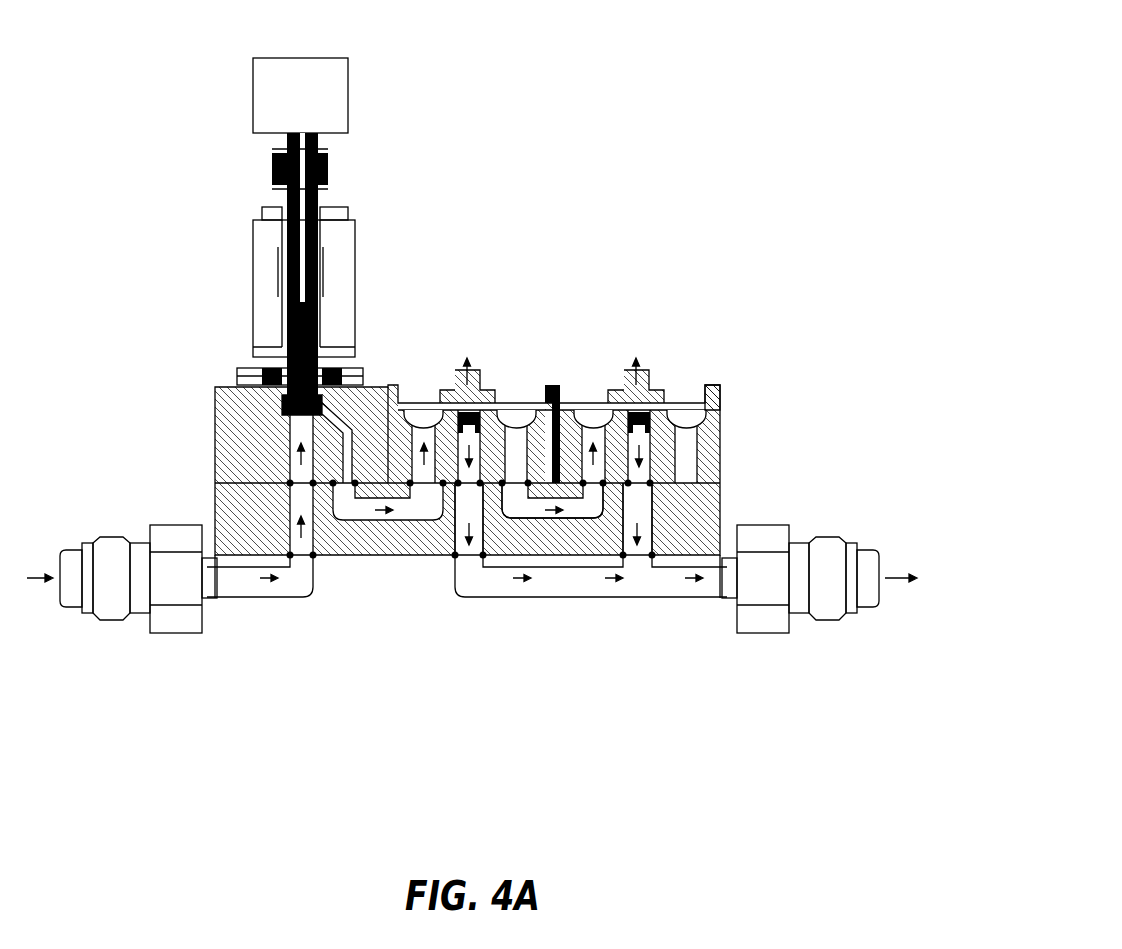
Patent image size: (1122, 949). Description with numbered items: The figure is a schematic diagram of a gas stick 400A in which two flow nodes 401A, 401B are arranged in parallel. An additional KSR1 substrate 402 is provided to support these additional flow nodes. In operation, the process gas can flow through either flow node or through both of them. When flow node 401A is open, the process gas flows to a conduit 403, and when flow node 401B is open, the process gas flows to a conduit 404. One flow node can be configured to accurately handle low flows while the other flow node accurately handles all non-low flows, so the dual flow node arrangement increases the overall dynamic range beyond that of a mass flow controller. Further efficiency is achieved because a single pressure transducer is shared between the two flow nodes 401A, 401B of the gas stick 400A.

The gas stick 400A is at (800, 27).
The flow node 401A is at (535, 398).
The flow node 401B is at (720, 378).
The KSR1 substrate 402 is at (523, 532).
The conduit 403 is at (470, 503).
The conduit 404 is at (641, 503).